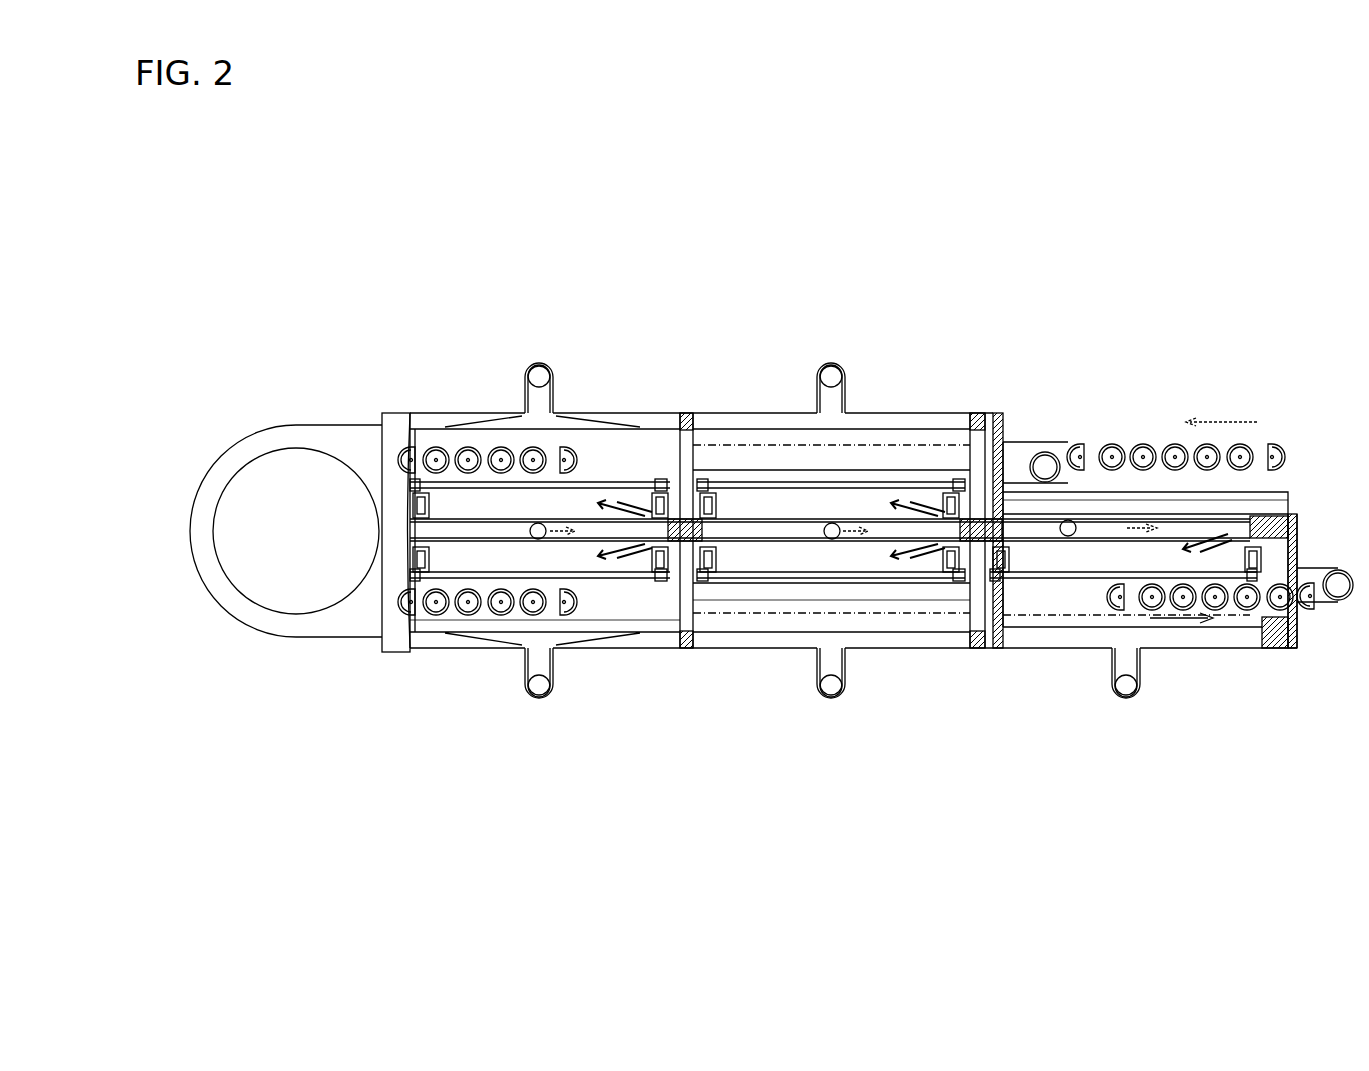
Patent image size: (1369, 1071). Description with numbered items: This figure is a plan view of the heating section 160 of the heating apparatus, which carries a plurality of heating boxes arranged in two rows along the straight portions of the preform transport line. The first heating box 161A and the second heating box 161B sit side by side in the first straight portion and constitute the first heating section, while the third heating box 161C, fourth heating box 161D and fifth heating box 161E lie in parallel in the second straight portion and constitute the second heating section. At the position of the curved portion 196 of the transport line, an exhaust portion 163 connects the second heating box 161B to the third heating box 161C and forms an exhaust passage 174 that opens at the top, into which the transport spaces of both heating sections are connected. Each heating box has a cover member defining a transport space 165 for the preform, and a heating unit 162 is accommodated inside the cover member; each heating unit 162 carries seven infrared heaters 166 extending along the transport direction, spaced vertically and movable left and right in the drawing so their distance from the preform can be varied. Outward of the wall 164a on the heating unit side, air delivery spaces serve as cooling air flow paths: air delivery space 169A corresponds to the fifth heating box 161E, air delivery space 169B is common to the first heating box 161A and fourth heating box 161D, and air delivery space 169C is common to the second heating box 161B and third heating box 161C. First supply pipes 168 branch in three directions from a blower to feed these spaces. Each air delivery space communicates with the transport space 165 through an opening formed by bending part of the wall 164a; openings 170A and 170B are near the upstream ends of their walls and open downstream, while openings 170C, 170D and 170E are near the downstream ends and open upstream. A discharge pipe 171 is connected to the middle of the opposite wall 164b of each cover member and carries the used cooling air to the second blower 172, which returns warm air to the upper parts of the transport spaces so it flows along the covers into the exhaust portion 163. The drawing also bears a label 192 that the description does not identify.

The heating section 160 is at (1084, 239).
The first heating box 161A is at (931, 348).
The second heating box 161B is at (633, 348).
The third heating box 161C is at (563, 781).
The fourth heating box 161D is at (907, 774).
The fifth heating box 161E is at (1172, 774).
The exhaust portion 163 is at (292, 472).
The curved portion 196 is at (286, 531).
The exhaust passage 174 is at (255, 485).
The wall 164a is at (577, 518).
The wall 164b is at (580, 412).
The transport space 165 is at (420, 445).
The heater 166 is at (845, 540).
The heating unit 162 is at (445, 482).
The first supply pipe 168 is at (543, 537).
The air delivery space 169A is at (1102, 530).
The air delivery space 169B is at (880, 555).
The air delivery space 169C is at (598, 628).
The opening 170A is at (925, 510).
The opening 170B is at (630, 508).
The opening 170C is at (625, 555).
The opening 170D is at (925, 555).
The opening 170E is at (1210, 560).
The discharge pipe 171 is at (538, 368).
The second blower 172 is at (1338, 600).
The inlet pipe 192 is at (1046, 452).